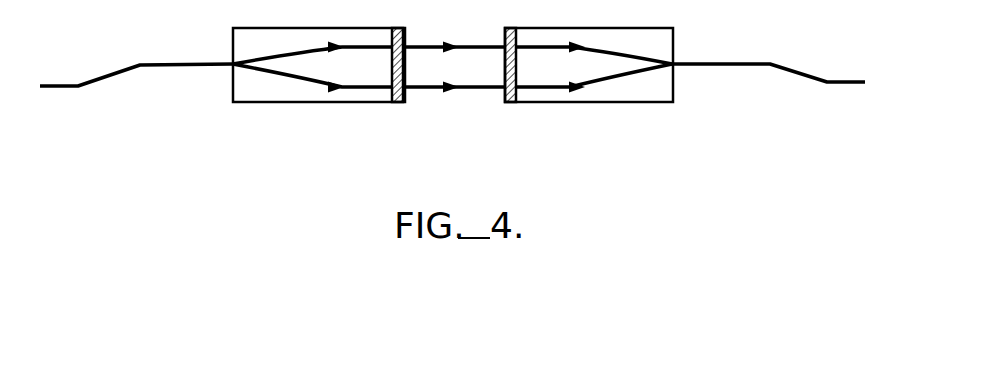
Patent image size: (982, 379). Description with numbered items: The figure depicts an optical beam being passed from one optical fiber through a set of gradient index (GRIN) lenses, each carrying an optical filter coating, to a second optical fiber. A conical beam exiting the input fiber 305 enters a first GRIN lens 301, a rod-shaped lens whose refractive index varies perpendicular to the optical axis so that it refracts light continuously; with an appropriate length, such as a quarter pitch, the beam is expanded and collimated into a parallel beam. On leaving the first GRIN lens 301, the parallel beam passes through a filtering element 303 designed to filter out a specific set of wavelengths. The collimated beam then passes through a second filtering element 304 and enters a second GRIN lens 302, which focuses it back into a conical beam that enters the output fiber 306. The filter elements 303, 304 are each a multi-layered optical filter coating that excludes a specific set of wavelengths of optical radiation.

The first GRIN lens 301 is at (280, 95).
The second GRIN lens 302 is at (632, 92).
The filtering element 303 is at (397, 103).
The second filtering element 304 is at (508, 100).
The fiber 305 is at (182, 70).
The fiber 306 is at (725, 67).